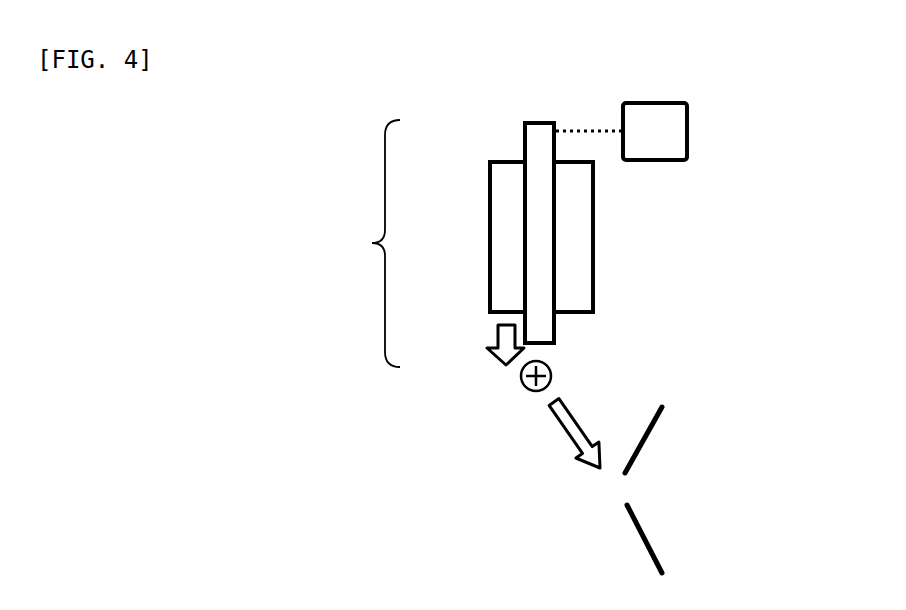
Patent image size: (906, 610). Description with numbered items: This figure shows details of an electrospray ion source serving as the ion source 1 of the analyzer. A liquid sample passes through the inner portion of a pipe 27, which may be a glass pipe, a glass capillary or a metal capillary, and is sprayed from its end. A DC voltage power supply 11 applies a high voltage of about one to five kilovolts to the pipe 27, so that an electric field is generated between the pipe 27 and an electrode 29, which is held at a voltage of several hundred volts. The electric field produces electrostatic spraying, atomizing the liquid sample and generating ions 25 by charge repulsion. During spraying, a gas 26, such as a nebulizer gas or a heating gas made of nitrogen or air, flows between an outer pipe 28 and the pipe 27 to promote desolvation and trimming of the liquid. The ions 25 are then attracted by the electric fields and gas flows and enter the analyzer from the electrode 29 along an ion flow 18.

The ion source 1 is at (375, 243).
The DC voltage power supply 11 is at (621, 131).
The ion flow 18 is at (560, 433).
The ions 25 is at (521, 383).
The gas 26 is at (497, 340).
The pipe 27 is at (524, 132).
The pipe 28 is at (488, 233).
The electrode 29 is at (650, 430).